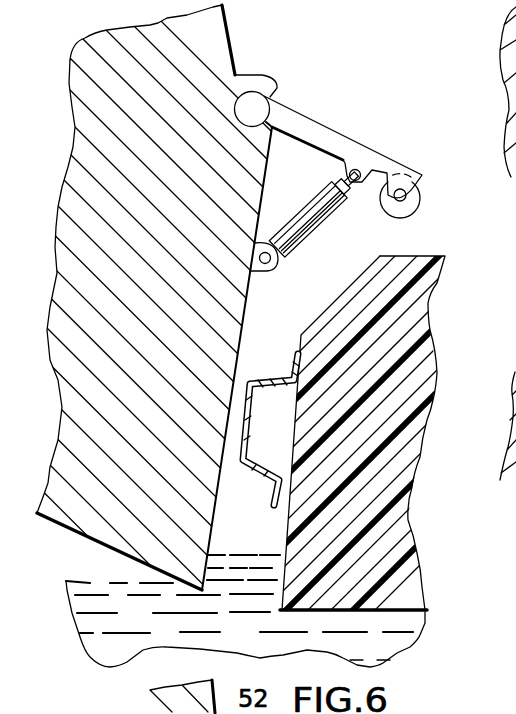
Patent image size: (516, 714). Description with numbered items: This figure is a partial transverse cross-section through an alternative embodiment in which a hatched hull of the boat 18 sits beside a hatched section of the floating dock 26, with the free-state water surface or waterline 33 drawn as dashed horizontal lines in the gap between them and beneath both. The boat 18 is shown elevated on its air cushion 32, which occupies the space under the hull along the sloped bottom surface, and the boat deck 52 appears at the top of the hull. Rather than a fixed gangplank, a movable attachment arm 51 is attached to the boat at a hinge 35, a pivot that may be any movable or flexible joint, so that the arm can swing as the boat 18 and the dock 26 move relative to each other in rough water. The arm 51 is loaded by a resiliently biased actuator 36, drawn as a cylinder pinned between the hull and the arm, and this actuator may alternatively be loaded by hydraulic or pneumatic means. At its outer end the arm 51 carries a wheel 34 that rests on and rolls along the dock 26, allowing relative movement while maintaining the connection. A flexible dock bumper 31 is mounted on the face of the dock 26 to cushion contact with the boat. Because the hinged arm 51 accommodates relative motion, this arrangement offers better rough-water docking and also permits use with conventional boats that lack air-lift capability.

The boat 18 is at (158, 275).
The floating dock 26 is at (385, 435).
The dock flexible bumper 31 is at (267, 376).
The air cushion 32 is at (72, 556).
The water surface or waterline 33 is at (66, 581).
The wheel 34 is at (420, 197).
The hinge 35 is at (268, 102).
The resiliently biased actuator 36 is at (306, 207).
The movable attachment arm 51 is at (343, 133).
The boat deck 52 is at (252, 72).